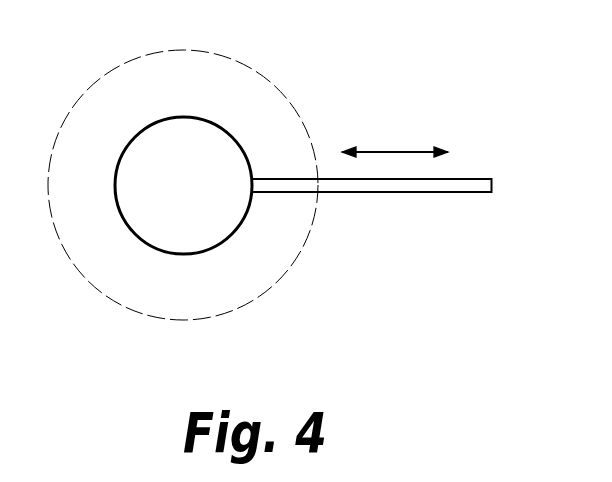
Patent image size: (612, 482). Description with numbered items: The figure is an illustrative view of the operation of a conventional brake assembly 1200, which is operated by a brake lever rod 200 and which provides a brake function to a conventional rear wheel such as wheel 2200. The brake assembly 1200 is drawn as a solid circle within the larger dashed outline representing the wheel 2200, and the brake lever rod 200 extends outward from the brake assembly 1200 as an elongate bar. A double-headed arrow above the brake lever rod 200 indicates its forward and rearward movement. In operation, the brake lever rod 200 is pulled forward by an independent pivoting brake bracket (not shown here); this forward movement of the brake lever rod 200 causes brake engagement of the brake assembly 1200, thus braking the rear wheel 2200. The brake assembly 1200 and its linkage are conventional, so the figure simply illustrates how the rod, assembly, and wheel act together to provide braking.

The wheel 2200 is at (257, 95).
The brake assembly 1200 is at (192, 231).
The brake lever rod 200 is at (388, 185).